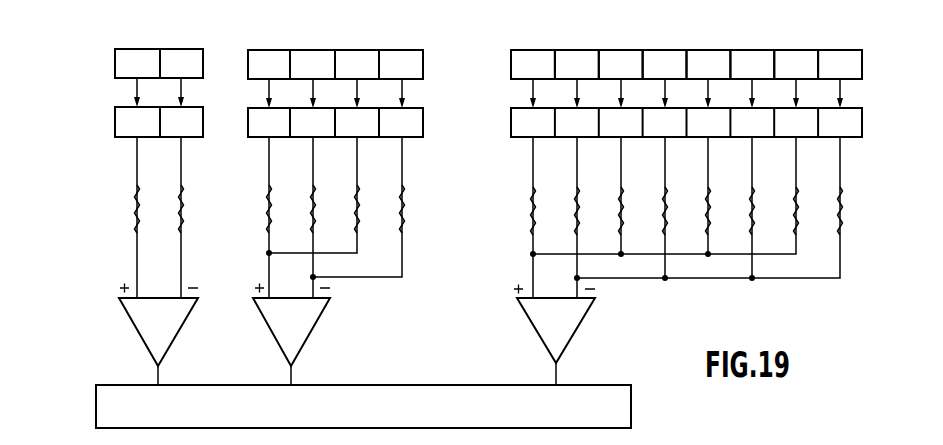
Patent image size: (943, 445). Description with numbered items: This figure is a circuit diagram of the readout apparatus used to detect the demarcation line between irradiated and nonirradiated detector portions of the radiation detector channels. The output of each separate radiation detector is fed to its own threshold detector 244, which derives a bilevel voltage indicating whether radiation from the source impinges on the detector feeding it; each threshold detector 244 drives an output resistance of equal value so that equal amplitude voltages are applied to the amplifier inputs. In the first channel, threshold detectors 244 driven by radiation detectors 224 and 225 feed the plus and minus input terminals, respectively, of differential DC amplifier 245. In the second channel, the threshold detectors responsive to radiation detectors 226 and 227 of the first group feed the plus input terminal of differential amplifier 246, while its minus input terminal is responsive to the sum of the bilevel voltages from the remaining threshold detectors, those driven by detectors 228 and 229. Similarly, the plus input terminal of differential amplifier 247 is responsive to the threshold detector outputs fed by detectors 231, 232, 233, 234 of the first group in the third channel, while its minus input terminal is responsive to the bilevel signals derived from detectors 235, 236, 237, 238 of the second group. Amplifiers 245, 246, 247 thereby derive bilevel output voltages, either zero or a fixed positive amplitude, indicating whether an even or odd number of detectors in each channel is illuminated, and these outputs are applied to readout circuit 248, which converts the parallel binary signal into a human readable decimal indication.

The radiation detector 224 is at (154, 48).
The radiation detector 225 is at (196, 48).
The radiation detector 226 is at (280, 49).
The radiation detector 227 is at (370, 49).
The radiation detector 228 is at (325, 49).
The radiation detector 229 is at (416, 49).
The radiation detector 231 is at (540, 49).
The radiation detector 232 is at (632, 49).
The radiation detector 233 is at (720, 49).
The radiation detector 234 is at (806, 49).
The radiation detector 235 is at (587, 49).
The radiation detector 236 is at (675, 49).
The radiation detector 237 is at (762, 49).
The radiation detector 238 is at (850, 49).
The threshold detector 244 is at (100, 138).
The differential DC amplifier 245 is at (184, 322).
The differential DC amplifier 246 is at (317, 322).
The differential DC amplifier 247 is at (566, 349).
The readout circuit 248 is at (96, 409).